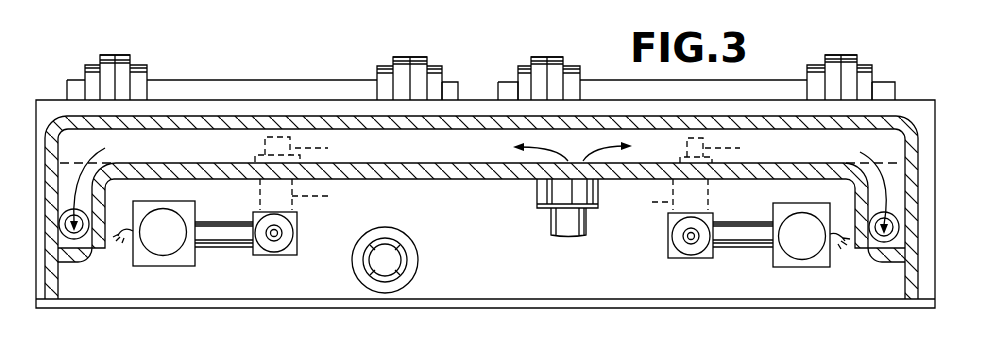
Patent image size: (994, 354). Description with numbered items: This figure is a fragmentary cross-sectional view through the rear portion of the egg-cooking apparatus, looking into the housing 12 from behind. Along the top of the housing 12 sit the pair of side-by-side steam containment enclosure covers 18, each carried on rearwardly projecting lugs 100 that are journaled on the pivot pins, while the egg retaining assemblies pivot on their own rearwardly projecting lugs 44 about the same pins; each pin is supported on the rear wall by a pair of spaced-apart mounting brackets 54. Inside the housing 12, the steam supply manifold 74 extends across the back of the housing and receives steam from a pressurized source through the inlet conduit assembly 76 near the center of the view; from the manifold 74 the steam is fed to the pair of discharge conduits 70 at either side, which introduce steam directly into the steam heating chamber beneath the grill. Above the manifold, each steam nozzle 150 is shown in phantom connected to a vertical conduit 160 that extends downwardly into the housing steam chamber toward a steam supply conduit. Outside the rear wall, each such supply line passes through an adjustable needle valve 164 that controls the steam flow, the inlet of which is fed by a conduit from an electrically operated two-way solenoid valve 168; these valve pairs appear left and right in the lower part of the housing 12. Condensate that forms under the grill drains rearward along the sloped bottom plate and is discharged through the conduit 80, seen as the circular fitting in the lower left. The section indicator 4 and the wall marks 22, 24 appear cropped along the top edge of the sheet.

The housing 12 is at (336, 301).
The steam containment enclosure cover 18 is at (243, 76).
The rearwardly projecting lug 100 is at (106, 55).
The rearwardly projecting lug 44 is at (127, 56).
The mounting bracket 54 is at (85, 68).
The steam supply manifold 74 is at (398, 184).
The inlet conduit assembly 76 is at (550, 208).
The steam nozzle 150 is at (517, 149).
The vertical conduit 160 is at (484, 201).
The discharge conduit 70 is at (80, 247).
The two-way solenoid valve 168 is at (175, 266).
The needle valve 164 is at (283, 258).
The conduit 80 is at (402, 263).
The section line 4 is at (725, 9).
The wall 22 is at (839, 6).
The wall 24 is at (892, 3).